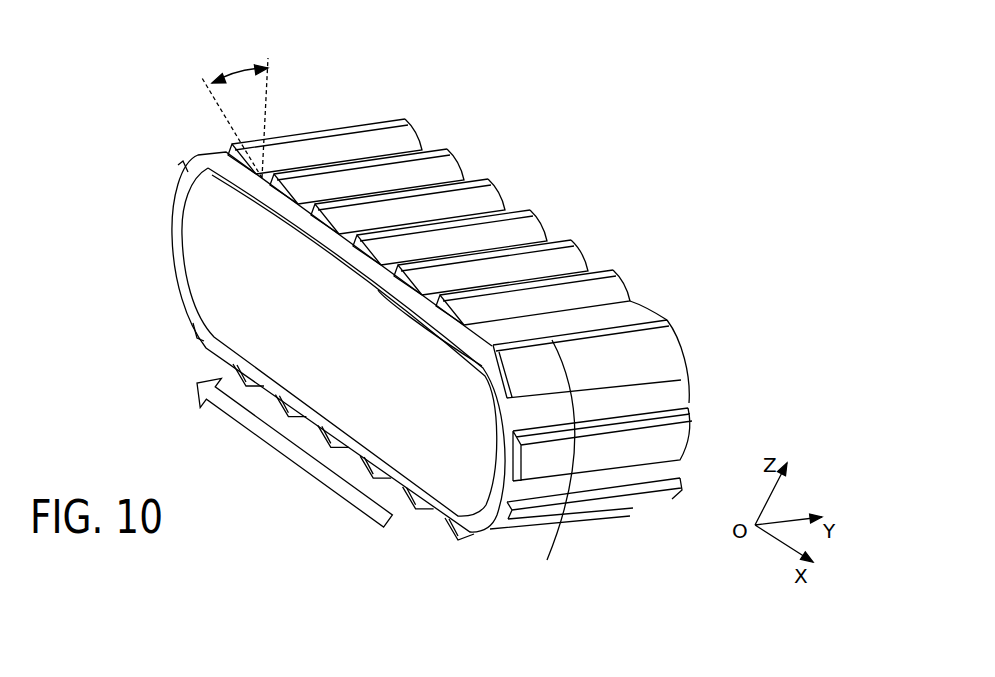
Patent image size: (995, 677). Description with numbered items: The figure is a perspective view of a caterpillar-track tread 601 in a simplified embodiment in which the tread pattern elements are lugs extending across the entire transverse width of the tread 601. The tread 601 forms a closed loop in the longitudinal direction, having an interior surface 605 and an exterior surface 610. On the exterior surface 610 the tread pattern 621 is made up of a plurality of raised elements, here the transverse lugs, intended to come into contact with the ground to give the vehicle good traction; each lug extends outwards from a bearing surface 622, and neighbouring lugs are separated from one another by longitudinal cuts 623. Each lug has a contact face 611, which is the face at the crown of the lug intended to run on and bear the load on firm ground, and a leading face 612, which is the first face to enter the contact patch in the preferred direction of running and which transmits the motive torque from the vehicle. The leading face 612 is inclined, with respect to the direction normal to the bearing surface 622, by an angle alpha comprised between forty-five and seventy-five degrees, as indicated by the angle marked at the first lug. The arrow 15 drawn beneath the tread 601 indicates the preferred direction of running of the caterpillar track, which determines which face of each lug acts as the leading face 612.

The tread 601 is at (434, 300).
The interior surface 605 is at (178, 300).
The exterior surface 610 is at (216, 361).
The contact face 611 is at (548, 464).
The leading face 612 is at (497, 232).
The tread pattern 621 is at (456, 163).
The bearing surface 622 is at (674, 464).
The longitudinal cuts 623 is at (346, 246).
The arrow 15 is at (294, 452).